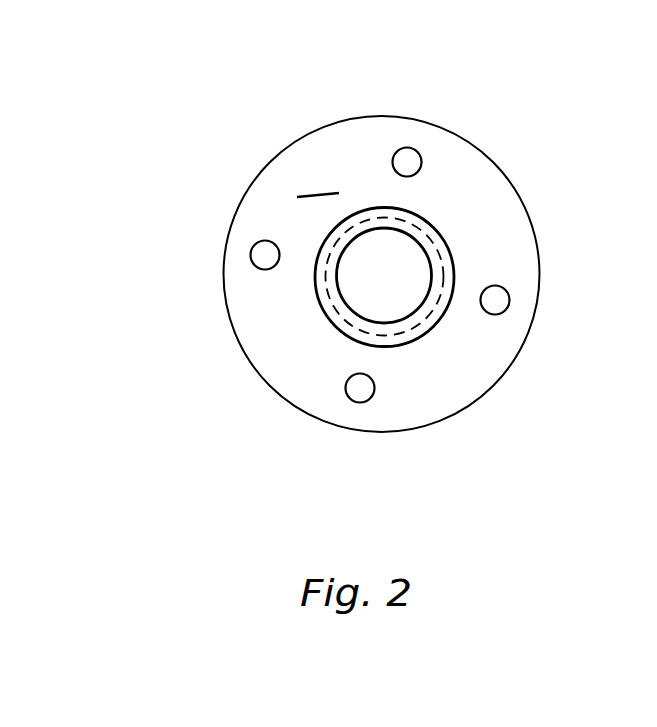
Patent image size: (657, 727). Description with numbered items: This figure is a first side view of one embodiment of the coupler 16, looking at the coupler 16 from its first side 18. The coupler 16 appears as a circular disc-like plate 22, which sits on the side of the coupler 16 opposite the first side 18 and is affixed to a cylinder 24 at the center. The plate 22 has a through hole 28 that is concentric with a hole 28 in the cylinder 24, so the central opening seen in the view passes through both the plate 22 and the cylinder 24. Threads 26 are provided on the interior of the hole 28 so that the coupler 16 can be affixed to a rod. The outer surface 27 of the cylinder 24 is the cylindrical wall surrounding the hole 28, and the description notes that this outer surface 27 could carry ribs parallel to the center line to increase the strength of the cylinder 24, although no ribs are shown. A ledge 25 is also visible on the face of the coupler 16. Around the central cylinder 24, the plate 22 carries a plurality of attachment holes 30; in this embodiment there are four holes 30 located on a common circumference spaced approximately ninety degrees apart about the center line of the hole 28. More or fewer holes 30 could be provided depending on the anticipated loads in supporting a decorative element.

The coupler 16 is at (387, 277).
The first side 18 is at (385, 301).
The plate 22 is at (540, 241).
The cylinder 24 is at (420, 337).
The ledge 25 is at (318, 176).
The threads 26 is at (424, 310).
The outer surface 27 is at (445, 301).
The hole 28 is at (353, 301).
The attachment holes 30 is at (362, 403).